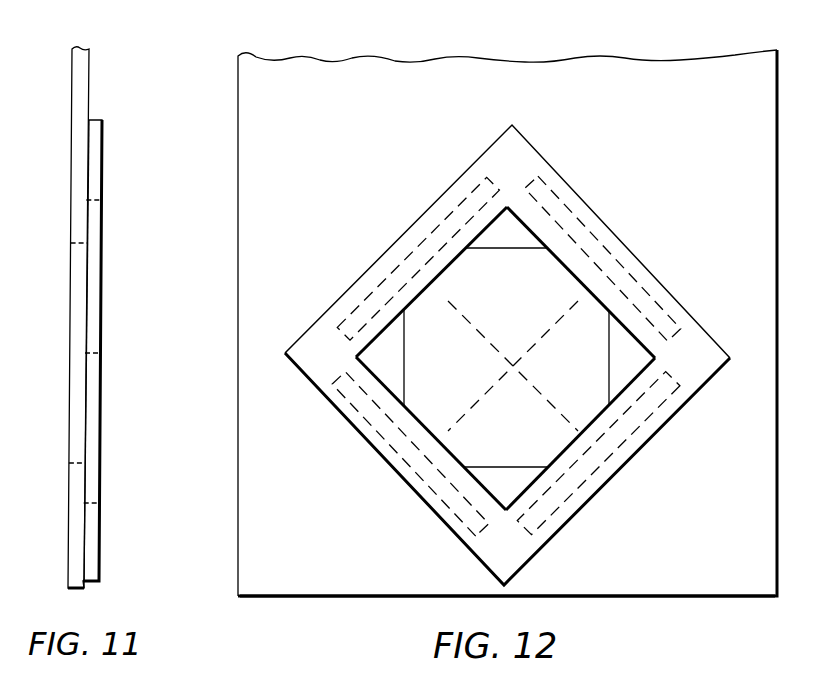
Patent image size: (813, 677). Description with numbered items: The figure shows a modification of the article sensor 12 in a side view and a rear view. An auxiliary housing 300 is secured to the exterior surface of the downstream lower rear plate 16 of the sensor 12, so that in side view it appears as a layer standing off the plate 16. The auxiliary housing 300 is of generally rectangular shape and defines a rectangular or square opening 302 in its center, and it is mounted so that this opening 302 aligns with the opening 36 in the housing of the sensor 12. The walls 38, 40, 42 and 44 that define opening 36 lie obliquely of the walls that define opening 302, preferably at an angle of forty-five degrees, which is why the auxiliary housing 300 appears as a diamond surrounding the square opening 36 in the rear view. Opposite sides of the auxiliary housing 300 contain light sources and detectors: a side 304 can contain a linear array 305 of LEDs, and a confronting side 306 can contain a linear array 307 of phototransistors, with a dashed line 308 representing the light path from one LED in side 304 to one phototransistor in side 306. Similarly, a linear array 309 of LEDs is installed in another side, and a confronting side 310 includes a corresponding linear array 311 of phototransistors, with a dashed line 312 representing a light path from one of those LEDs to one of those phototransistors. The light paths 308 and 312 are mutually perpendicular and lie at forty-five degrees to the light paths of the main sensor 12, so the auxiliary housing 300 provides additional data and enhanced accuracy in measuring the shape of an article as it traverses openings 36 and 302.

In FIG. 11, the article sensor 12 is at (62, 522).
In FIG. 12, the article sensor 12 is at (232, 523).
In FIG. 12, the downstream lower rear plate 16 is at (380, 558).
In FIG. 12, the opening 36 is at (532, 420).
In FIG. 12, the right side of square 38 is at (609, 344).
In FIG. 12, the housing 40 is at (404, 366).
In FIG. 12, the bottom side of square 42 is at (488, 467).
In FIG. 12, the top side of square 44 is at (484, 248).
In FIG. 11, the auxiliary housing 300 is at (107, 149).
In FIG. 12, the auxiliary housing 300 is at (551, 147).
In FIG. 12, the opening 302 is at (516, 226).
In FIG. 12, the side 304 is at (650, 372).
In FIG. 12, the linear array of LEDs 305 is at (640, 437).
In FIG. 12, the confronting side 306 is at (370, 334).
In FIG. 12, the linear array of phototransistors 307 is at (418, 258).
In FIG. 12, the dashed line 308 is at (560, 270).
In FIG. 12, the linear array of LEDs 309 is at (637, 280).
In FIG. 12, the confronting side 310 is at (452, 438).
In FIG. 12, the linear array of phototransistors 311 is at (377, 430).
In FIG. 12, the dashed line 312 is at (554, 335).